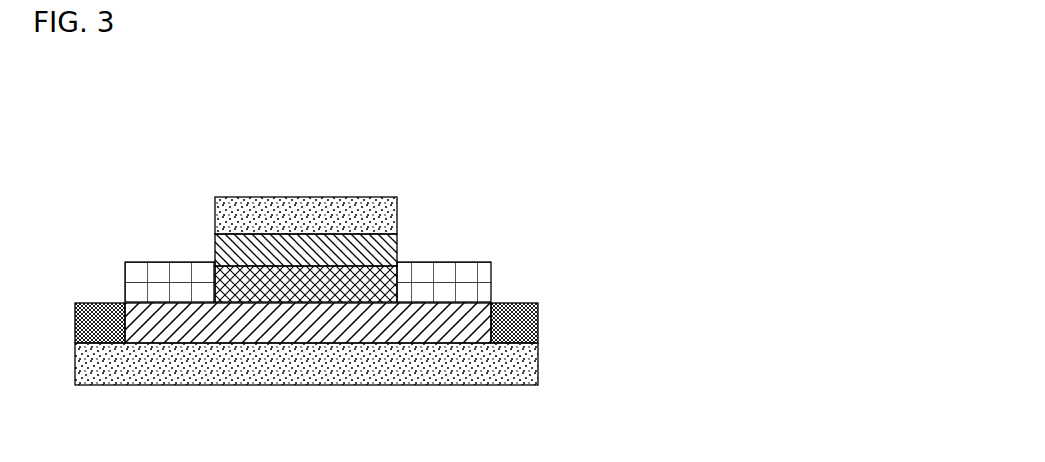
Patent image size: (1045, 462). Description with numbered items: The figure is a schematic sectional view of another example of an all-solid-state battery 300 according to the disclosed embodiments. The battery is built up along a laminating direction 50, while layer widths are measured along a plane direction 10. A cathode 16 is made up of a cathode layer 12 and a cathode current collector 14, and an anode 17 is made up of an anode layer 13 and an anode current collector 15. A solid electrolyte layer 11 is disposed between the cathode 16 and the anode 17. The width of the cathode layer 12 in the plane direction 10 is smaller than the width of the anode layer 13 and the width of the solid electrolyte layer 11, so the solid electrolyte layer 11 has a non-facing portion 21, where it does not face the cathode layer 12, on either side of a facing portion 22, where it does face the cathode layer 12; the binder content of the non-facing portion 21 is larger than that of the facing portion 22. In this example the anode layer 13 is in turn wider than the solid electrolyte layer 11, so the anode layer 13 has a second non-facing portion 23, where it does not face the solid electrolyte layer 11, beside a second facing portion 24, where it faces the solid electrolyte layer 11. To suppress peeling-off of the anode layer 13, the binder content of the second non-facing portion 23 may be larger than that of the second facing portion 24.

The all-solid-state battery 300 is at (114, 130).
The plane direction 10 is at (79, 443).
The laminating direction 50 is at (815, 388).
The solid electrolyte layer 11 is at (573, 233).
The cathode layer 12 is at (397, 244).
The anode layer 13 is at (628, 312).
The cathode current collector 14 is at (383, 197).
The anode current collector 15 is at (527, 368).
The cathode 16 is at (525, 135).
The anode 17 is at (695, 313).
The non-facing portion 21 is at (150, 274).
The facing portion 22 is at (398, 264).
The second non-facing portion 23 is at (88, 302).
The second facing portion 24 is at (510, 343).